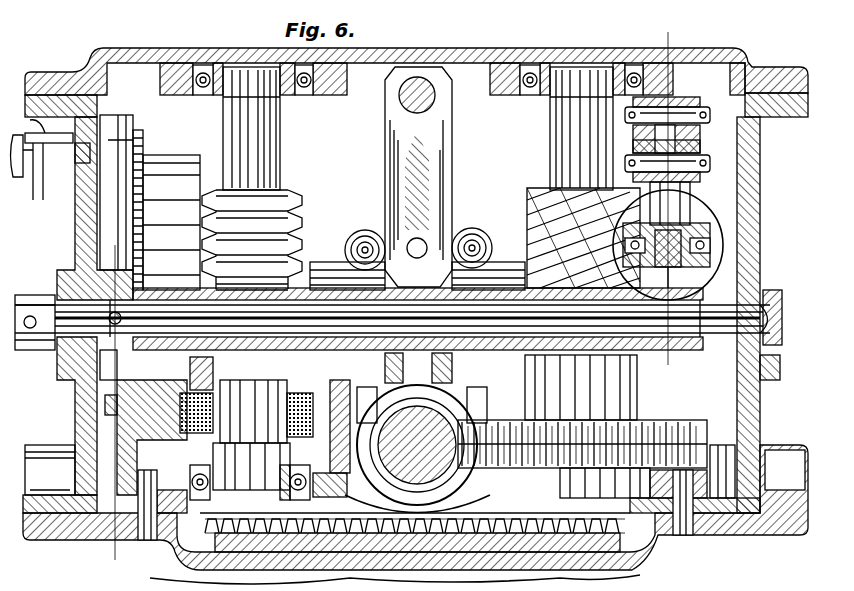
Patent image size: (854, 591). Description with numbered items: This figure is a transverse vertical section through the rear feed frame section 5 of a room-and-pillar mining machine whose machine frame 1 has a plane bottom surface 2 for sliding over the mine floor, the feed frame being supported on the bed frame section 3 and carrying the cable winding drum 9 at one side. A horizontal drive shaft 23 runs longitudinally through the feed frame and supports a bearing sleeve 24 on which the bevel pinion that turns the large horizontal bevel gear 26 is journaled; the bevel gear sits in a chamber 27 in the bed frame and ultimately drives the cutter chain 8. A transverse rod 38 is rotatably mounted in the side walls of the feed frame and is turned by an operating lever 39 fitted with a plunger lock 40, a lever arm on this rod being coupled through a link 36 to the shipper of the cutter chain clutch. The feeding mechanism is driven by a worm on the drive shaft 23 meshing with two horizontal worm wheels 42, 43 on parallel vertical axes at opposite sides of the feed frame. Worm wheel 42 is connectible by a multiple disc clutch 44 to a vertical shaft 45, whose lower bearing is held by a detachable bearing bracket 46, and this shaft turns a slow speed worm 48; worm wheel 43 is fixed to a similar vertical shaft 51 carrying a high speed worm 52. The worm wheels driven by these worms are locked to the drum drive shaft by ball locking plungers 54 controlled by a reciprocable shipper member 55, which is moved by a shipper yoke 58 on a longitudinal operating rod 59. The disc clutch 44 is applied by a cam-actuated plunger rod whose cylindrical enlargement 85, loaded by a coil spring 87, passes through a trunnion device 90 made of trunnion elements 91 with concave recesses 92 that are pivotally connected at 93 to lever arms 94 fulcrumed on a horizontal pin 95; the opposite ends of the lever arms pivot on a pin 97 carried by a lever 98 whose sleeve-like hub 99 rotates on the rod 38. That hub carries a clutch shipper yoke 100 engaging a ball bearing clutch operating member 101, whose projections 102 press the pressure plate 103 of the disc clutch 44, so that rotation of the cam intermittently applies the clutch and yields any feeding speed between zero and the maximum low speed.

The machine frame 1 is at (768, 393).
The plane bottom surface 2 is at (126, 247).
The bed frame section 3 is at (128, 562).
The feed frame section 5 is at (732, 55).
The cutter chain 8 is at (645, 33).
The cable winding drum 9 is at (105, 487).
The drive shaft 23 is at (438, 420).
The bearing sleeve 24 is at (437, 490).
The bevel gear 26 is at (535, 522).
The chamber 27 is at (190, 560).
The link 36 is at (110, 405).
The rod 38 is at (776, 318).
The operating lever 39 is at (40, 282).
The plunger lock 40 is at (36, 130).
The worm wheel 42 is at (66, 450).
The worm wheel 43 is at (690, 445).
The multiple disc clutch 44 is at (150, 468).
The vertical shaft 45 is at (262, 134).
The bearing bracket 46 is at (100, 540).
The slow speed worm 48 is at (222, 225).
The vertical shaft 51 is at (547, 376).
The high speed worm 52 is at (545, 200).
The locking plungers 54 is at (358, 238).
The shipper member 55 is at (480, 228).
The shipper yoke 58 is at (440, 126).
The operating rod 59 is at (418, 88).
The cylindrical enlargement 85 is at (735, 252).
The coil spring 87 is at (107, 363).
The trunnion device 90 is at (652, 300).
The trunnion elements 91 is at (622, 190).
The concave recesses 92 is at (710, 218).
The pivotal connection 93 is at (712, 262).
The lever arms 94 is at (645, 136).
The horizontal pin 95 is at (712, 170).
The horizontal pin 97 is at (688, 100).
The lever 98 is at (740, 193).
The sleeve-like hub 99 is at (690, 345).
The clutch shipper yoke 100 is at (320, 287).
The ball bearing clutch operating member 101 is at (298, 356).
The projections 102 is at (200, 382).
The pressure plate 103 is at (315, 382).